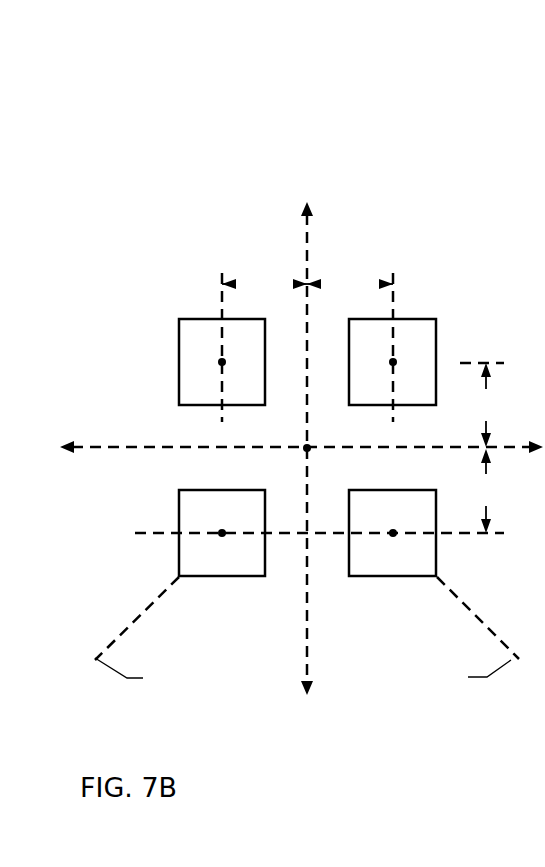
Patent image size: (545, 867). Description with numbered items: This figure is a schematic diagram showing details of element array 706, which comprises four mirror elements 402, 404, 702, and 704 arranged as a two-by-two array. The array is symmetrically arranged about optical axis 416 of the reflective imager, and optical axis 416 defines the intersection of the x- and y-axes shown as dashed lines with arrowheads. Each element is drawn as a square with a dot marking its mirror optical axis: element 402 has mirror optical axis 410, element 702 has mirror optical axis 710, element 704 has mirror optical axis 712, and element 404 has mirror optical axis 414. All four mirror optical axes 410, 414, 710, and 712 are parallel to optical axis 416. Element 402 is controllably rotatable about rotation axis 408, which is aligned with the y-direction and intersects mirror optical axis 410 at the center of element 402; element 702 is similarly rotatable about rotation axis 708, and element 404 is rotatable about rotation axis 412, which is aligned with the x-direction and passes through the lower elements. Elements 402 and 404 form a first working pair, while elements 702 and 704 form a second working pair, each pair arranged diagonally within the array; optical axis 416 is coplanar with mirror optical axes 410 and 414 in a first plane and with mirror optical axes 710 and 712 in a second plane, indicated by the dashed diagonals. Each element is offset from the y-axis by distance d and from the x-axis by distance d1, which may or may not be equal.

The element array 706 is at (93, 142).
The element 402 is at (178, 339).
The element 702 is at (437, 338).
The element 704 is at (178, 567).
The element 404 is at (437, 560).
The rotation axis 408 is at (222, 297).
The rotation axis 708 is at (395, 293).
The rotation axis 412 is at (160, 535).
The mirror optical axis 410 is at (221, 362).
The mirror optical axis 710 is at (392, 366).
The mirror optical axis 712 is at (222, 538).
The mirror optical axis 414 is at (392, 538).
The optical axis 416 is at (304, 449).